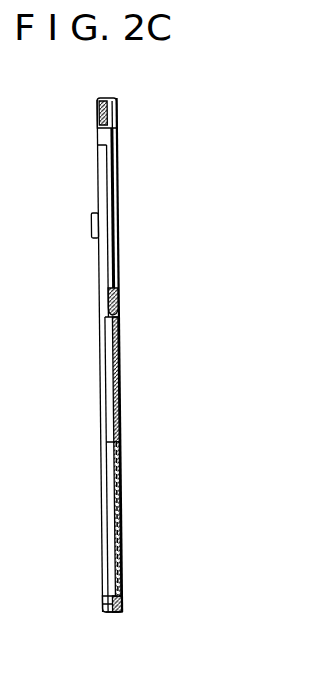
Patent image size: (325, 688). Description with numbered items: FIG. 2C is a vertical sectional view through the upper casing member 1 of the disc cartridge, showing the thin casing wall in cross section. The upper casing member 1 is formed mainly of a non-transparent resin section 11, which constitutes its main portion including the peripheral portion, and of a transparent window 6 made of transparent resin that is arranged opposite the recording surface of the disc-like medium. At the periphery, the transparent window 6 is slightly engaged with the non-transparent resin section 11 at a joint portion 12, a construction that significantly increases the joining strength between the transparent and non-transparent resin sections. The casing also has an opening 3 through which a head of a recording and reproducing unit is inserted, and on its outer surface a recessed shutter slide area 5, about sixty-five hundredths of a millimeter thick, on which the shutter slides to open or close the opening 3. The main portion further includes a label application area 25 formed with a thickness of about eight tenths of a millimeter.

The upper casing member 1 is at (111, 620).
The opening 3 is at (119, 150).
The shutter slide area 5 is at (119, 290).
The transparent window 6 is at (120, 389).
The non-transparent resin section 11 is at (118, 118).
The joint portion 12 is at (117, 319).
The label application area 25 is at (119, 523).